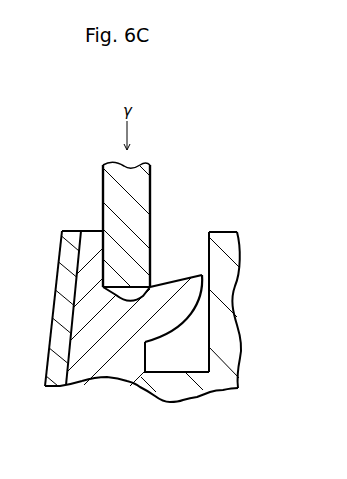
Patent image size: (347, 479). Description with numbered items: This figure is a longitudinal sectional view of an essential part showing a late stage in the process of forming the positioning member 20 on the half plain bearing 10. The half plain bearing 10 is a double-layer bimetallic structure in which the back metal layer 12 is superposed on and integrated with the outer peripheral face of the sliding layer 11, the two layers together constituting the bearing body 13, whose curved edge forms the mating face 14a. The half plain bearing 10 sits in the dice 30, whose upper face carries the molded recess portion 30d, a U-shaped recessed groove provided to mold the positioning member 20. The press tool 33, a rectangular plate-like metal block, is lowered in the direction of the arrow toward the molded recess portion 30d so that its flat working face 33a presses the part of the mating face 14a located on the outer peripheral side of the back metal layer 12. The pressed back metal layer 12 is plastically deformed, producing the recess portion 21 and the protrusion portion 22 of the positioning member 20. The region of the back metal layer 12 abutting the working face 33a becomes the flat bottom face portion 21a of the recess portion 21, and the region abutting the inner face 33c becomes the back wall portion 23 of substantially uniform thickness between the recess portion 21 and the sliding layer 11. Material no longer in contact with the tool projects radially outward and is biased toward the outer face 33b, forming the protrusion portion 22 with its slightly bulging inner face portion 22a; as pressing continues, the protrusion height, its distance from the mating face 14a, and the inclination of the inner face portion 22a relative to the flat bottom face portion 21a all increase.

The half plain bearing 10 is at (70, 189).
The sliding layer 11 is at (53, 388).
The back metal layer 12 is at (82, 384).
The bearing body 13 is at (92, 429).
The mating face 14a is at (68, 224).
The positioning member 20 is at (174, 338).
The recess portion 21 is at (105, 242).
The flat bottom face portion 21a is at (113, 283).
The protrusion portion 22 is at (190, 303).
The inner face portion 22a is at (177, 275).
The back wall portion 23 is at (88, 230).
The dice 30 is at (232, 263).
The molded recess portion 30d is at (208, 240).
The press tool 33 is at (145, 186).
The working face 33a is at (136, 288).
The outer face 33b is at (150, 203).
The inner face 33c is at (103, 177).